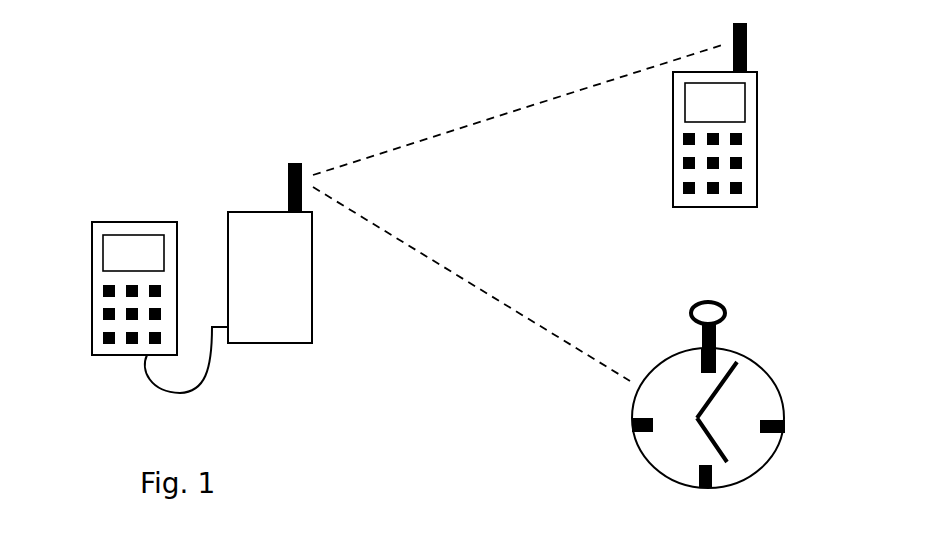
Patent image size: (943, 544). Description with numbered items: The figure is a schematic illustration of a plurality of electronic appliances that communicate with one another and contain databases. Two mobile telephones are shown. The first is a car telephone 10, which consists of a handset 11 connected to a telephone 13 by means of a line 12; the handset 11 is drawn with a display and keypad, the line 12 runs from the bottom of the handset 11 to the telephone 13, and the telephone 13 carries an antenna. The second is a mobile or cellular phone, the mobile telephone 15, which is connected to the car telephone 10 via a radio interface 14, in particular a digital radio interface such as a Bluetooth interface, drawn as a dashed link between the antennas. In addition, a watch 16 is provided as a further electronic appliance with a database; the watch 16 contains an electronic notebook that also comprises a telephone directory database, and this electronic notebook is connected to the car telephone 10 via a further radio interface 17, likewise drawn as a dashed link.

The car telephone 10 is at (203, 207).
The handset 11 is at (100, 221).
The line 12 is at (200, 385).
The telephone 13 is at (312, 317).
The radio interface 14 is at (512, 113).
The mobile telephone 15 is at (757, 143).
The watch 16 is at (753, 360).
The further radio interface 17 is at (510, 311).